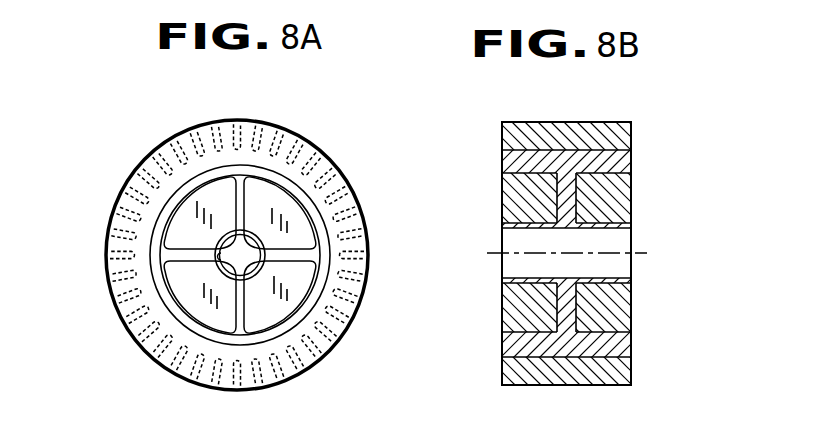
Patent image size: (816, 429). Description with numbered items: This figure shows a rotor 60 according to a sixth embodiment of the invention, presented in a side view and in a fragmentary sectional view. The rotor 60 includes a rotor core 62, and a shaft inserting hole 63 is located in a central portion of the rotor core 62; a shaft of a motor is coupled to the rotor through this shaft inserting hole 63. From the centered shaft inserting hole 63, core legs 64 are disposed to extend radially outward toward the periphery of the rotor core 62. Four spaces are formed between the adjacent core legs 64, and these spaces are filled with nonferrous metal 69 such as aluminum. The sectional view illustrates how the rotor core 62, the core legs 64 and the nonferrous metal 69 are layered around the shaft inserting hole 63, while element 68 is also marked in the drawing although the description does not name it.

In FIG. 8A, the rotor 60 is at (363, 188).
In FIG. 8B, the rotor 60 is at (645, 158).
In FIG. 8A, the rotor core 62 is at (120, 318).
In FIG. 8B, the rotor core 62 is at (626, 196).
In FIG. 8A, the shaft inserting hole 63 is at (223, 258).
In FIG. 8B, the shaft inserting hole 63 is at (597, 233).
In FIG. 8A, the core legs 64 is at (238, 200).
In FIG. 8B, the web 68 is at (557, 318).
In FIG. 8A, the nonferrous metal 69 is at (200, 307).
In FIG. 8B, the nonferrous metal 69 is at (617, 313).